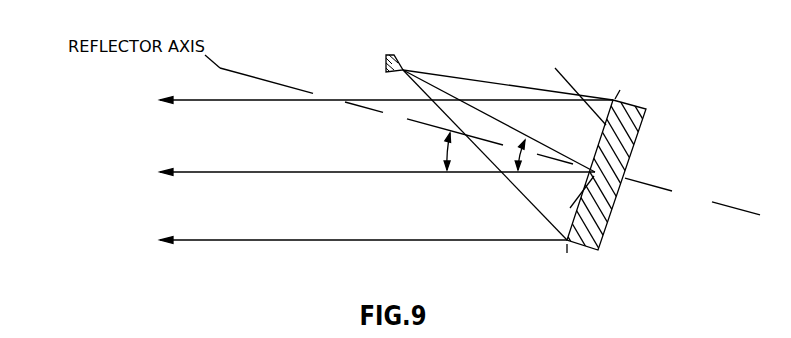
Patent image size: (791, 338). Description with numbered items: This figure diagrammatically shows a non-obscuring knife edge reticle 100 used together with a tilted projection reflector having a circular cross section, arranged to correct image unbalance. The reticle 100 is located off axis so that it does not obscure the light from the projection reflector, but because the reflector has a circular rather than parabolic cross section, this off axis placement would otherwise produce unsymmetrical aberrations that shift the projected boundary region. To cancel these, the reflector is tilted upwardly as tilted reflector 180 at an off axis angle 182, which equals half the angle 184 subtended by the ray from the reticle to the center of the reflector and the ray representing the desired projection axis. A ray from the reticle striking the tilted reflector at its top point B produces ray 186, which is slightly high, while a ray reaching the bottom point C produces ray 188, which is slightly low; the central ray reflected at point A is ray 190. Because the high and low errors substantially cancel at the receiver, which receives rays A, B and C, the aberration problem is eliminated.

The reticle 100 is at (384, 52).
The tilted reflector 180 is at (611, 216).
The off axis angle 182 is at (436, 153).
The angle 184 is at (521, 153).
The ray 186 is at (238, 104).
The ray 188 is at (235, 245).
The reflected ray A 190 is at (235, 177).